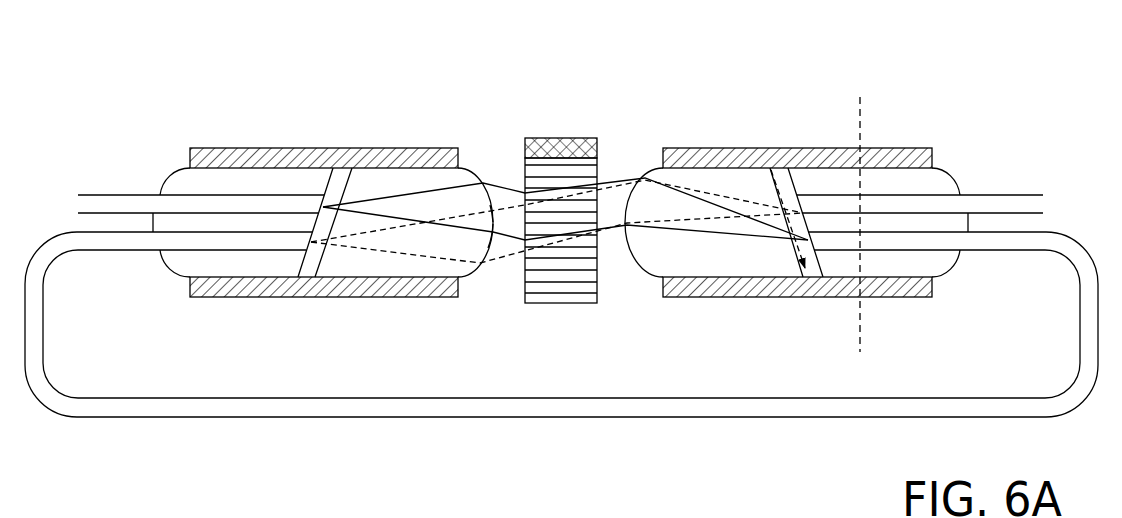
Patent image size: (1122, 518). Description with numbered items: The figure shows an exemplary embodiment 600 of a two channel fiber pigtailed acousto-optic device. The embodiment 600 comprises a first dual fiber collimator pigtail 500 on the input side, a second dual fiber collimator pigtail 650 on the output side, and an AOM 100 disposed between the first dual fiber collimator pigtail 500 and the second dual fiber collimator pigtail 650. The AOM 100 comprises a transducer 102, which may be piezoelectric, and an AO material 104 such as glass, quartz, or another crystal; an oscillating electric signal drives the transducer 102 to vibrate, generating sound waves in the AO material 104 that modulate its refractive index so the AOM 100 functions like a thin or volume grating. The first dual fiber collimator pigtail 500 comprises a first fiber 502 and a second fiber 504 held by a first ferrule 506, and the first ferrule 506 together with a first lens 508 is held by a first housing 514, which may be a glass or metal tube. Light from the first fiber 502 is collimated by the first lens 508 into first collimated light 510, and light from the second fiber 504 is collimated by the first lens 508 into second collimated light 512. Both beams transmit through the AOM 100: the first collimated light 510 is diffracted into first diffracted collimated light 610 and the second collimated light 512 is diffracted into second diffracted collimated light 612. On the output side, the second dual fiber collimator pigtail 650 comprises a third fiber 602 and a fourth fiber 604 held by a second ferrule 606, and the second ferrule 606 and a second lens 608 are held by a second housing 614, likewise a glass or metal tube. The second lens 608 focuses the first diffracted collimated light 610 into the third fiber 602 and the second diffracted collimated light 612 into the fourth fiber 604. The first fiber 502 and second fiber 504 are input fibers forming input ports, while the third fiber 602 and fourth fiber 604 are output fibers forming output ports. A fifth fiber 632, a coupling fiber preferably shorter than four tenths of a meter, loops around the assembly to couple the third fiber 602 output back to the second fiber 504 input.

The embodiment 600 is at (161, 64).
The first dual fiber collimator pigtail 500 is at (161, 149).
The first fiber 502 is at (115, 195).
The second fiber 504 is at (115, 252).
The first ferrule 506 is at (172, 272).
The first lens 508 is at (467, 170).
The first collimated light 510 is at (498, 180).
The second collimated light 512 is at (503, 267).
The first housing 514 is at (325, 148).
The transducer 102 is at (562, 140).
The AO material 104 is at (598, 278).
The AOM 100 is at (562, 307).
The first diffracted collimated light 610 is at (607, 180).
The second diffracted collimated light 612 is at (608, 230).
The second lens 608 is at (715, 270).
The second housing 614 is at (786, 152).
The second dual fiber collimator pigtail 650 is at (923, 127).
The fourth fiber 604 is at (1005, 195).
The third fiber 602 is at (1005, 252).
The second ferrule 606 is at (950, 270).
The fifth fiber 632 is at (920, 398).